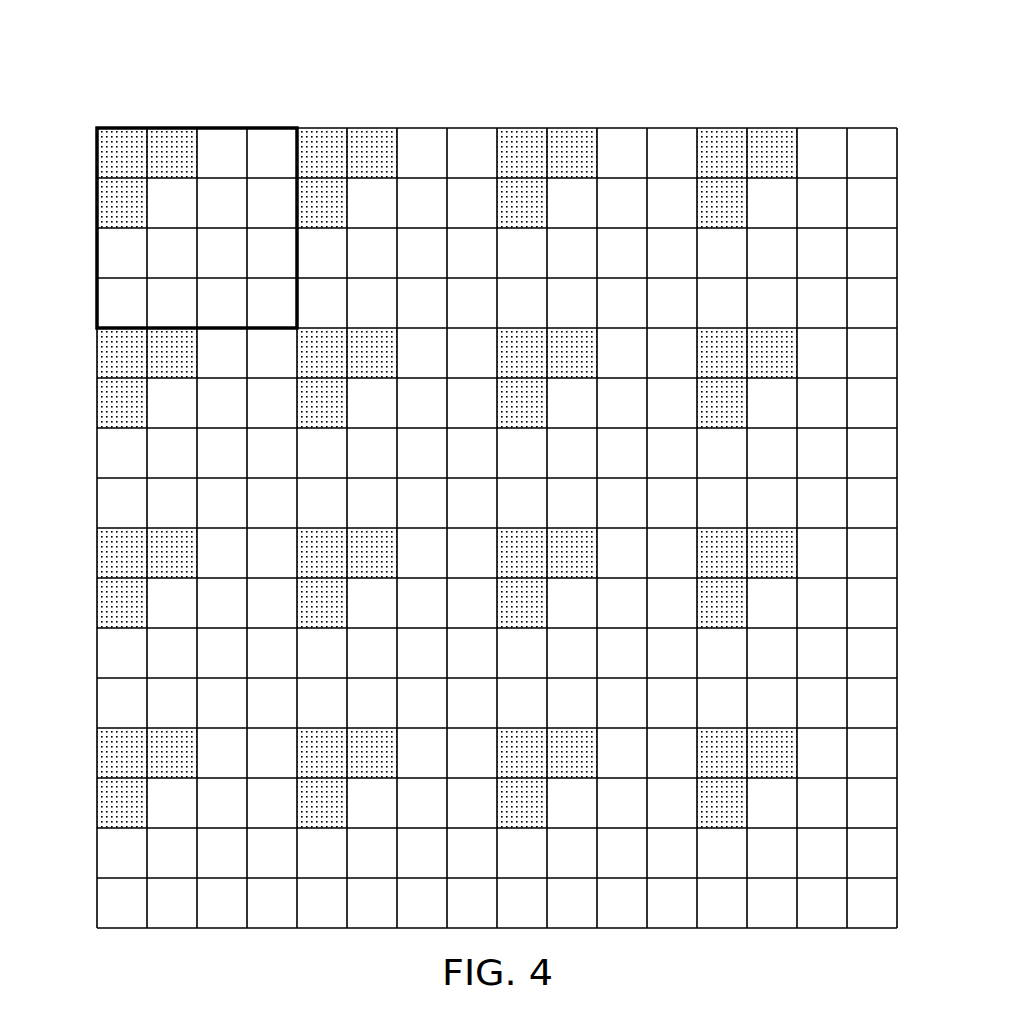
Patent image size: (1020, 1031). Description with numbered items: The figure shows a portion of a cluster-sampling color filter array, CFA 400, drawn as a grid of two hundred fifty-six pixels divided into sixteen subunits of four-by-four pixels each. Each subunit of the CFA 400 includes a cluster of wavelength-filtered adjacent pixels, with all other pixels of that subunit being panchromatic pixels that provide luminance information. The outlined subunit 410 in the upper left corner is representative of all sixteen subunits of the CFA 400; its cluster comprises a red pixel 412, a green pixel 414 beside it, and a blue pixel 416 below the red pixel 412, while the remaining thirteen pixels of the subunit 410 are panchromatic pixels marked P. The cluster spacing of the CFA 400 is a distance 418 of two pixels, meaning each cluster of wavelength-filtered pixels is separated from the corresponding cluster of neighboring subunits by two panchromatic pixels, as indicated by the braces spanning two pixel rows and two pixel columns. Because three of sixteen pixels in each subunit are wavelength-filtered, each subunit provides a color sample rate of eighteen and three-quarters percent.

The cluster-sampling CFA 400 is at (672, 78).
The subunit 410 is at (224, 126).
The red pixel 412 is at (98, 155).
The green pixel 414 is at (173, 137).
The blue pixel 416 is at (98, 205).
The distance 418 is at (87, 228).